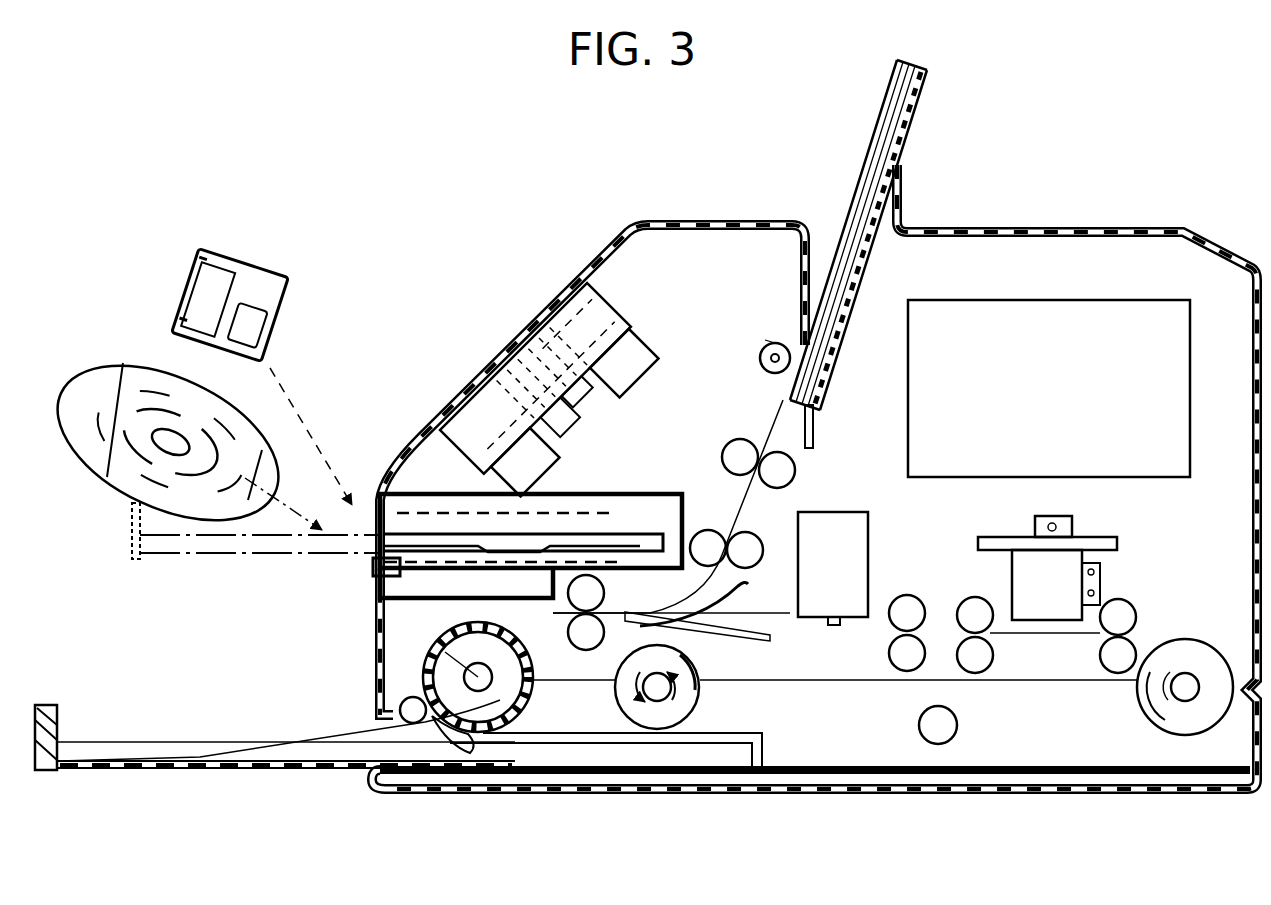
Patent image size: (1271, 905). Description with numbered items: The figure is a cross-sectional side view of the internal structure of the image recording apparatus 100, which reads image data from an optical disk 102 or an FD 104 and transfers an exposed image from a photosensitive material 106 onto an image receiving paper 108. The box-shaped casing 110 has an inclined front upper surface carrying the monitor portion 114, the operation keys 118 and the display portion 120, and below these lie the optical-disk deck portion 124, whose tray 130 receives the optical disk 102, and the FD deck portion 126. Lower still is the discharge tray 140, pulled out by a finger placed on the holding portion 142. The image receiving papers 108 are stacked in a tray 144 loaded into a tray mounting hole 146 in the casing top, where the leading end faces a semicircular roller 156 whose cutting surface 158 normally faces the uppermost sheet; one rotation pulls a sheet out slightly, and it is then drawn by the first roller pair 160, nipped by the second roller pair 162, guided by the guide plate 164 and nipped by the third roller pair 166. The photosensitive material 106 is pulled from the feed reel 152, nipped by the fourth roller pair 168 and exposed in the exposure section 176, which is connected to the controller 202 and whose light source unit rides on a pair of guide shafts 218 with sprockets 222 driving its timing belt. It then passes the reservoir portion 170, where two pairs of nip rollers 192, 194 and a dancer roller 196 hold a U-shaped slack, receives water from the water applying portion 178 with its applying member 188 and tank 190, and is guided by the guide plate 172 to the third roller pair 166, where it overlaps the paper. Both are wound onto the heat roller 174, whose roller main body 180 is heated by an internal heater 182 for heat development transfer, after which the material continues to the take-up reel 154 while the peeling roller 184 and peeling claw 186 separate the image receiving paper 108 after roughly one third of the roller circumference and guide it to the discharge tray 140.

The image recording apparatus 100 is at (582, 186).
The optical disk 102 is at (122, 366).
The FD 104 is at (282, 266).
The photosensitive material 106 is at (1146, 642).
The image receiving paper 108 is at (868, 98).
The casing 110 is at (713, 221).
The monitor portion 114 is at (605, 385).
The operation keys 118 is at (566, 428).
The display portion 120 is at (645, 346).
The optical-disk deck portion 124 is at (370, 566).
The FD deck portion 126 is at (481, 490).
The tray 130 is at (385, 521).
The discharge tray 140 is at (275, 739).
The holding portion 142 is at (66, 742).
The tray 144 is at (896, 254).
The tray mounting hole 146 is at (813, 272).
The feed reel 152 is at (1187, 693).
The take-up reel 154 is at (661, 701).
The semicircular roller 156 is at (770, 340).
The cutting surface 158 is at (760, 385).
The first roller pair 160 is at (795, 468).
The second roller pair 162 is at (766, 530).
The guide plate 164 is at (735, 592).
The third roller pair 166 is at (603, 582).
The fourth roller pair 168 is at (1126, 598).
The reservoir portion 170 is at (935, 752).
The guide plate 172 is at (768, 642).
The heat roller 174 is at (437, 726).
The exposure section 176 is at (1052, 547).
The water applying portion 178 is at (878, 626).
The roller main body 180 is at (488, 706).
The heater 182 is at (445, 652).
The peeling roller 184 is at (403, 705).
The peeling claw 186 is at (462, 753).
The applying member 188 is at (851, 625).
The tank 190 is at (850, 573).
The nip rollers 192 is at (988, 657).
The nip rollers 194 is at (906, 662).
The dancer roller 196 is at (950, 732).
The controller 202 is at (1031, 298).
The guide shafts 218 is at (1083, 595).
The sprockets 222 is at (1046, 521).